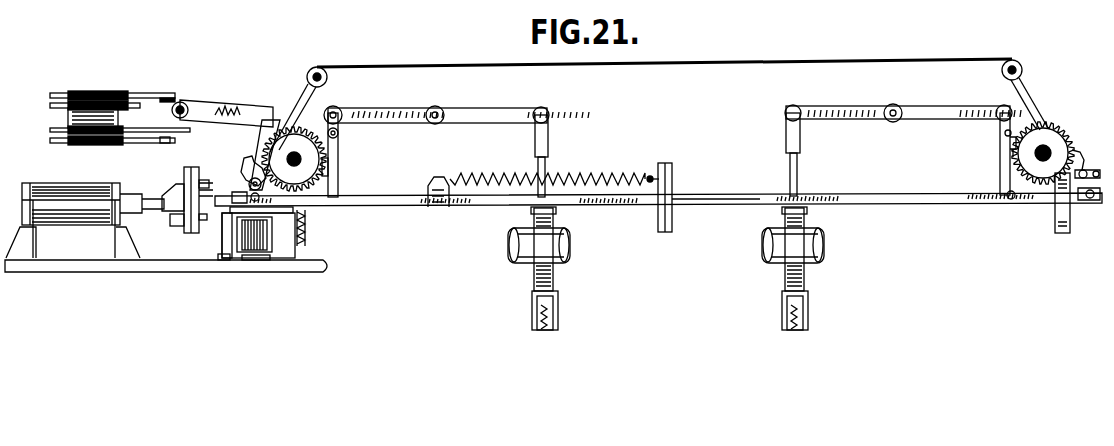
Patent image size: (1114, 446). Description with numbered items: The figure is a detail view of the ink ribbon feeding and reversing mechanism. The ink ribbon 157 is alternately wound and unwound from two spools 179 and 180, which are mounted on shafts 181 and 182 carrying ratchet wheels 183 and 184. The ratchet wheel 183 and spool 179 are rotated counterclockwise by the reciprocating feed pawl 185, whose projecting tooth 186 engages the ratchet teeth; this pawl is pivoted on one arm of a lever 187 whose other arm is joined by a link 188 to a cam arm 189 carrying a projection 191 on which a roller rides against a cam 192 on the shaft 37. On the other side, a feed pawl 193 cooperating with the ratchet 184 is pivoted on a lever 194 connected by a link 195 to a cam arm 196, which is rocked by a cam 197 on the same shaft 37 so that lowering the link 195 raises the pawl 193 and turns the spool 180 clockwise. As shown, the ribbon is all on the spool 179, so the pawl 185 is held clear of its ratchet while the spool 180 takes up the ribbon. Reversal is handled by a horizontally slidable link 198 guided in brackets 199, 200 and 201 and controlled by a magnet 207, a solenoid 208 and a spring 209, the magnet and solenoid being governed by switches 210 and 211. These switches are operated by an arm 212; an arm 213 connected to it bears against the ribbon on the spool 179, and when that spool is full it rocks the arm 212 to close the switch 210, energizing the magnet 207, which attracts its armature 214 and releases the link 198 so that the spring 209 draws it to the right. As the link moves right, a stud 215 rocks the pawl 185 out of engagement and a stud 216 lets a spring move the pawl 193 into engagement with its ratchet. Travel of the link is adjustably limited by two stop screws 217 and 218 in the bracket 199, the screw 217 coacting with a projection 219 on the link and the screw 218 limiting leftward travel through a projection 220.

The shaft 37 is at (556, 264).
The ink ribbon 157 is at (742, 66).
The spool 179 is at (304, 136).
The spool 180 is at (1052, 131).
The shaft 181 is at (338, 137).
The shaft 182 is at (1035, 158).
The ratchet wheel 183 is at (302, 158).
The ratchet wheel 184 is at (1005, 133).
The feed pawl 185 is at (339, 186).
The projecting tooth 186 is at (340, 167).
The lever 187 is at (414, 116).
The link 188 is at (546, 166).
The cam arm 189 is at (558, 320).
The projection 191 is at (534, 323).
The cam 192 is at (540, 260).
The feed pawl 193 is at (1000, 174).
The lever 194 is at (927, 105).
The link 195 is at (797, 171).
The cam arm 196 is at (808, 321).
The cam 197 is at (786, 266).
The link 198 is at (701, 203).
The bracket 199 is at (189, 233).
The bracket 200 is at (658, 218).
The bracket 201 is at (1056, 224).
The magnet 207 is at (257, 255).
The solenoid 208 is at (58, 184).
The spring 209 is at (614, 175).
The switch 210 is at (173, 94).
The switch 211 is at (160, 142).
The arm 212 is at (231, 110).
The arm 213 is at (262, 132).
The armature 214 is at (226, 230).
The stud 215 is at (328, 205).
The stud 216 is at (1012, 200).
The stop screw 217 is at (250, 170).
The stop screw 218 is at (176, 226).
The projection 219 is at (170, 195).
The projection 220 is at (238, 196).